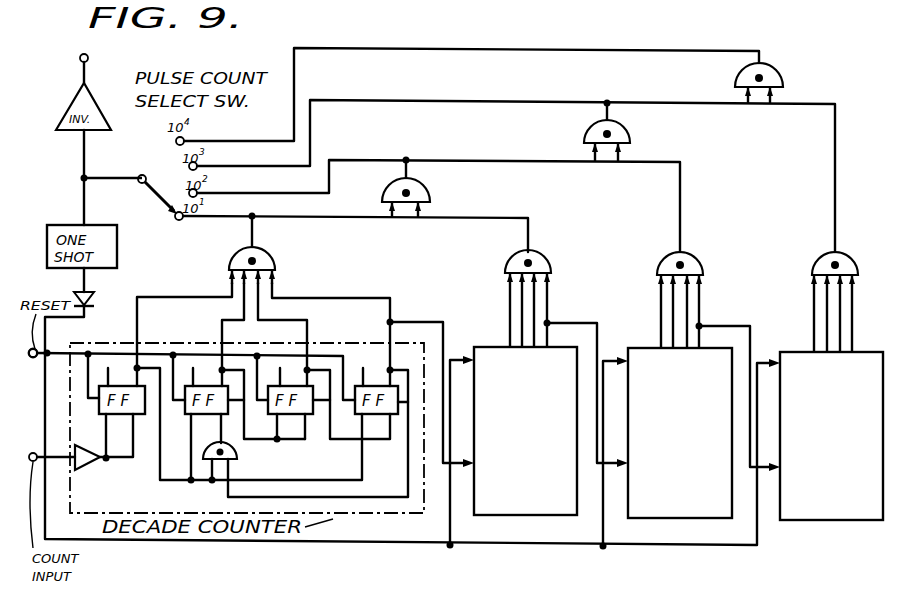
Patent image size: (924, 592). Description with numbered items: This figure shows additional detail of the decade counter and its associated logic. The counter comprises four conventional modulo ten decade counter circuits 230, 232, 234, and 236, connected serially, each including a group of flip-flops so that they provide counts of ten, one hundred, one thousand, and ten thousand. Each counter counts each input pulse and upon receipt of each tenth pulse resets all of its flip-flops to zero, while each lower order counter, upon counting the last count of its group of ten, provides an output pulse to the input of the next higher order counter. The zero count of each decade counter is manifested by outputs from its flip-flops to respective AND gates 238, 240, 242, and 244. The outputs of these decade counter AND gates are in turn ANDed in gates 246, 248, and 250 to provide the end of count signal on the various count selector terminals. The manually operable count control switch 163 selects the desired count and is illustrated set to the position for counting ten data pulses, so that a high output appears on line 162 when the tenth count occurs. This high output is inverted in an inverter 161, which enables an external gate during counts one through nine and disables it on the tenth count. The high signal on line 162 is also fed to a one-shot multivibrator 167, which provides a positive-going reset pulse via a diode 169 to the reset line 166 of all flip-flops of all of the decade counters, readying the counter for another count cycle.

The inverter 161 is at (70, 103).
The output line 162 is at (105, 176).
The count control switch 163 is at (157, 201).
The reset line 166 is at (35, 358).
The one-shot multivibrator 167 is at (117, 240).
The diode 169 is at (89, 298).
The decade counter circuit 230 is at (350, 512).
The decade counter circuit 232 is at (492, 515).
The decade counter circuit 234 is at (642, 520).
The decade counter circuit 236 is at (795, 522).
The AND gate 238 is at (273, 252).
The AND gate 240 is at (551, 252).
The AND gate 242 is at (700, 254).
The AND gate 244 is at (857, 247).
The AND gate 246 is at (430, 184).
The AND gate 248 is at (630, 132).
The AND gate 250 is at (783, 72).